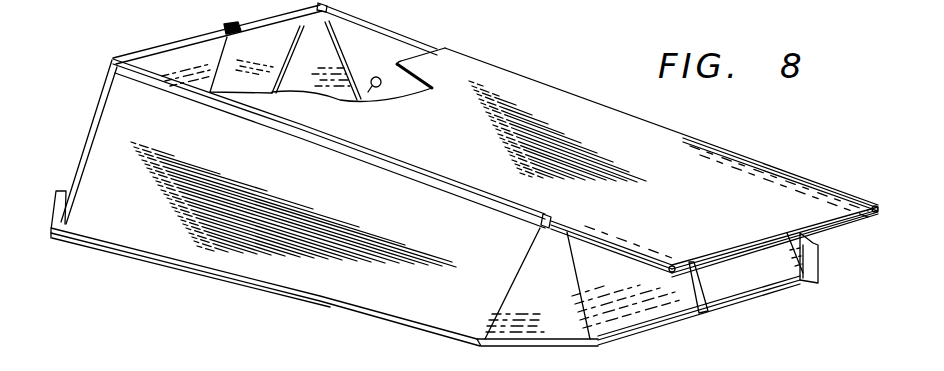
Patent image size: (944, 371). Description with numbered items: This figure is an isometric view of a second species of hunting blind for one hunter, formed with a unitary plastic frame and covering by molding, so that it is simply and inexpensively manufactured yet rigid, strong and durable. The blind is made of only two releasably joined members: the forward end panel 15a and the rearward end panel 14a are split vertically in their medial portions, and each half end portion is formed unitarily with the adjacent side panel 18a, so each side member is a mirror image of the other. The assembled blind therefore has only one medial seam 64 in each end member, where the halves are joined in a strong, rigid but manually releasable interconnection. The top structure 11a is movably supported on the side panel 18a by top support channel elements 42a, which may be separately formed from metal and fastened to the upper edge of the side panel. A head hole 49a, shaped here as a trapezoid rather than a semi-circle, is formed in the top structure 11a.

The top structure 11a is at (773, 163).
The rearward end panel 14a is at (64, 190).
The forward end panel 15a is at (770, 304).
The side panel 18a is at (202, 277).
The top support channel element 42a is at (392, 34).
The head hole 49a is at (377, 90).
The medial seam 64 is at (213, 60).